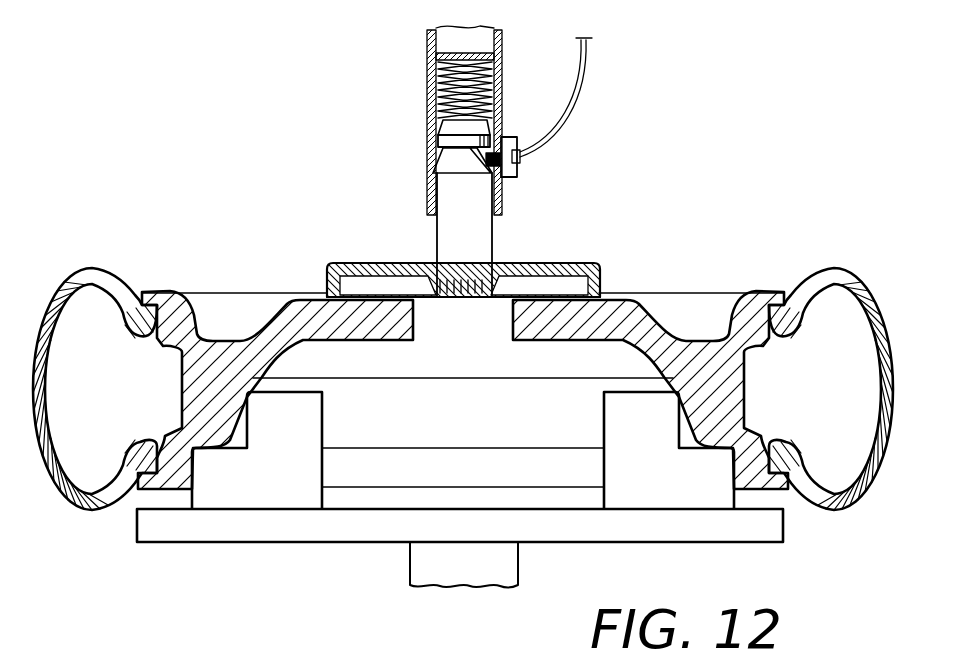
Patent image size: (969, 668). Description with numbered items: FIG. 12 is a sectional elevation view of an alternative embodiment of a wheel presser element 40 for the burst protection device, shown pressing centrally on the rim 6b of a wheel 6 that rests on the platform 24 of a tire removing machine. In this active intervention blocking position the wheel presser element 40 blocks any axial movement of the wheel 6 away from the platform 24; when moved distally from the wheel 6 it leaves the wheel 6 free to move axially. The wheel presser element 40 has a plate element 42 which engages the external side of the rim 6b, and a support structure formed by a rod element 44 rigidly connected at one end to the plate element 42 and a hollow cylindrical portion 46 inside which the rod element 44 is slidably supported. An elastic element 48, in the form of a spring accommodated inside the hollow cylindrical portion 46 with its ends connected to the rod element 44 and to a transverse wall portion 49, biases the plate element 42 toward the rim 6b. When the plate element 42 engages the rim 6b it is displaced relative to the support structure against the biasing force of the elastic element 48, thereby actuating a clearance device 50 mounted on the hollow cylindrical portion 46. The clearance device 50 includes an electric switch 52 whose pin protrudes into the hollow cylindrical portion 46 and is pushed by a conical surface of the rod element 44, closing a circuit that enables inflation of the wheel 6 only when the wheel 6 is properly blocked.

The wheel 6 is at (763, 274).
The rim 6b is at (622, 300).
The tire removing machine platform 24 is at (190, 548).
The wheel presser element 40 is at (345, 207).
The plate element 42 is at (325, 268).
The rod element 44 is at (460, 230).
The hollow cylindrical portion 46 is at (437, 90).
The elastic element 48 is at (472, 72).
The transverse wall portion 49 is at (455, 53).
The clearance device 50 is at (520, 182).
The electric switch 52 is at (519, 165).